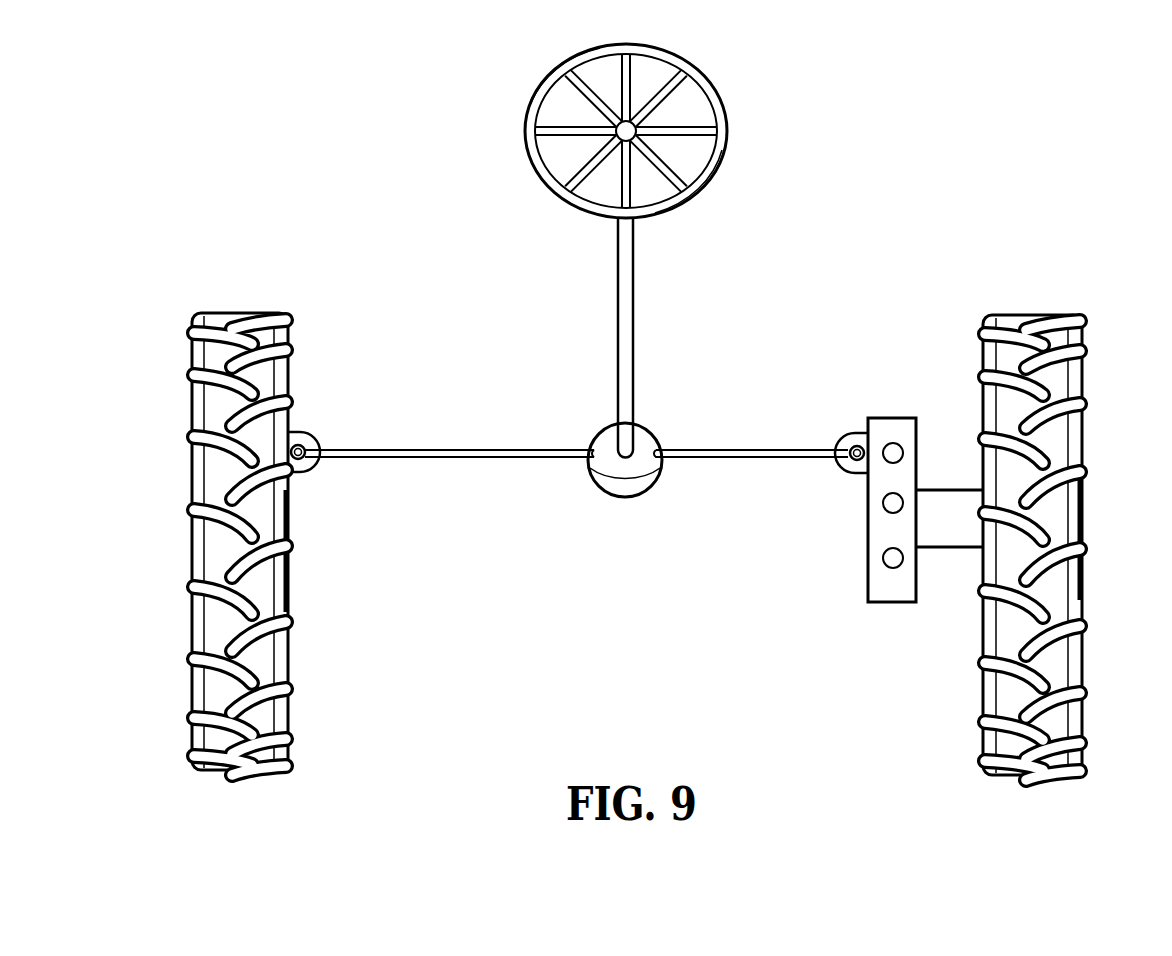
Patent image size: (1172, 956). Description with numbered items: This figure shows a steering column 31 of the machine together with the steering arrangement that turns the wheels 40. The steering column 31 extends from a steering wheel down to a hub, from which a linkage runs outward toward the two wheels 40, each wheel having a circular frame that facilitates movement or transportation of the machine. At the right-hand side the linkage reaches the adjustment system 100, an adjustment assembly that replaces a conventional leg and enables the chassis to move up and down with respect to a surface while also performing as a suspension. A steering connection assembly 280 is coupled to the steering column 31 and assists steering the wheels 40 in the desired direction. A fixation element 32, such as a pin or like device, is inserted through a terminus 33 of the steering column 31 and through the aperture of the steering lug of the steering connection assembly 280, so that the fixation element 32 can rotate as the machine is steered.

The steering column 31 is at (618, 335).
The fixation element 32 is at (855, 473).
The terminus 33 is at (727, 456).
The wheels 40 is at (240, 770).
The adjustment system 100 is at (871, 616).
The steering connection assembly 280 is at (850, 440).